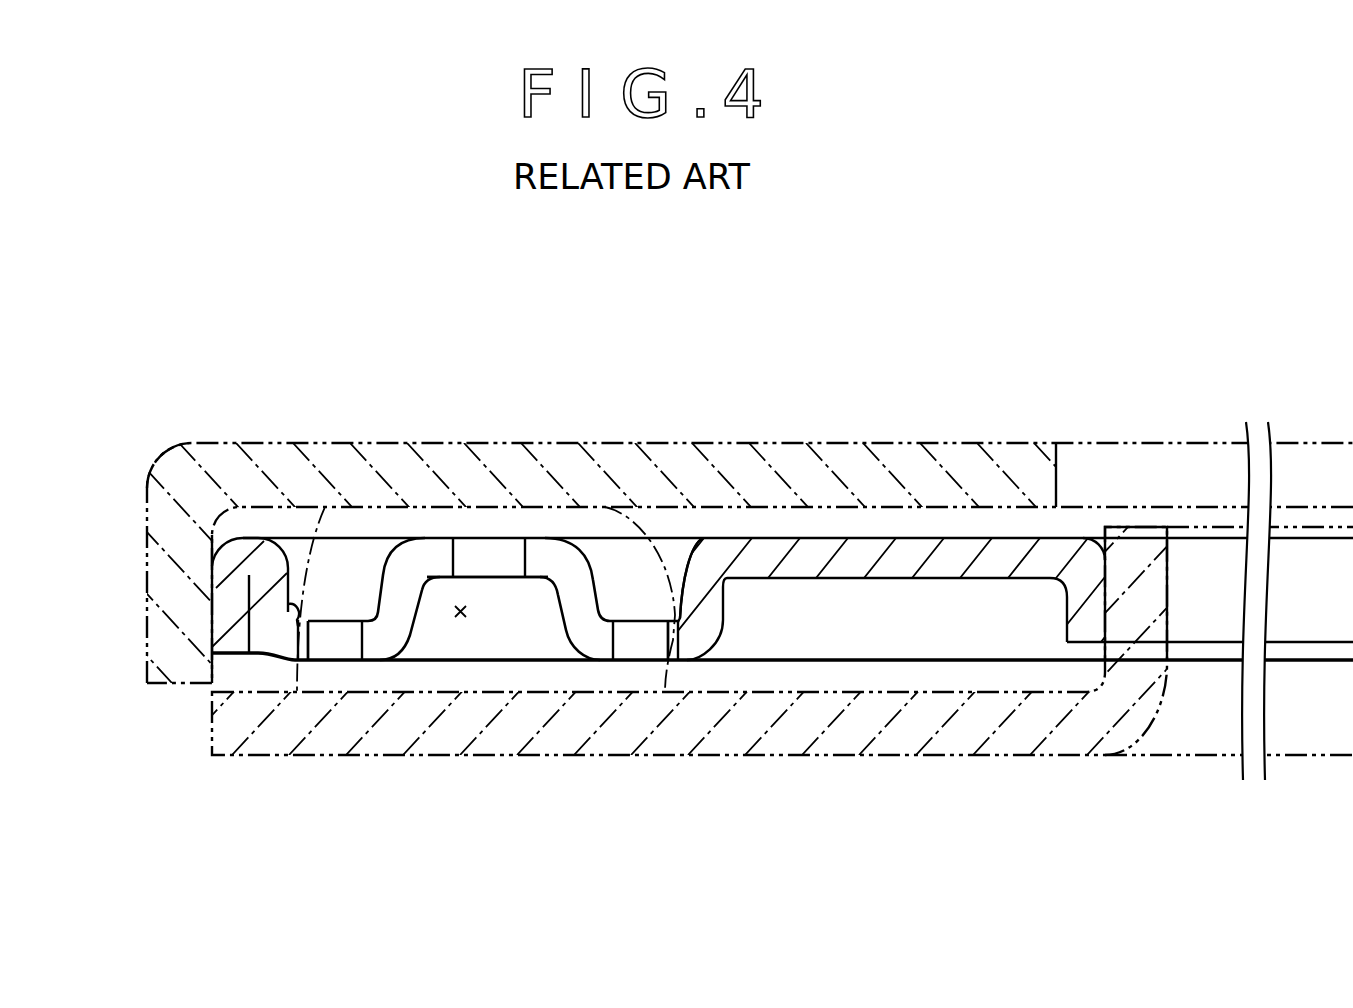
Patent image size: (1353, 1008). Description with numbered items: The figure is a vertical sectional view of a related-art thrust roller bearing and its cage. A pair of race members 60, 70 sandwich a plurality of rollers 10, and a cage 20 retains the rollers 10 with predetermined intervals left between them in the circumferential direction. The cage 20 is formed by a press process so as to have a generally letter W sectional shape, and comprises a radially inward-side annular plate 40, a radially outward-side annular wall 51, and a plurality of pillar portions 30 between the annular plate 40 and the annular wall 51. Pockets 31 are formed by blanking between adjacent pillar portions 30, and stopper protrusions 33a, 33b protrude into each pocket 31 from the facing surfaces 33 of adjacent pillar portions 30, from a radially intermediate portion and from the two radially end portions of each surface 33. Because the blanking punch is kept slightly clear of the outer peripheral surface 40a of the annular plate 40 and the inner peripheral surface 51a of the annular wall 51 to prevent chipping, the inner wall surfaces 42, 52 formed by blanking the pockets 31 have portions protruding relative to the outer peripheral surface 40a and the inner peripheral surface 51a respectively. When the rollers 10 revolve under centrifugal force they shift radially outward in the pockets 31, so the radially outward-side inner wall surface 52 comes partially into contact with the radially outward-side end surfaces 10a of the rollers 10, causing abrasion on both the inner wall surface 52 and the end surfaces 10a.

The roller 10 is at (328, 525).
The radially outward-side end surface of roller 10a is at (266, 443).
The cage 20 is at (805, 537).
The pillar portion 30 is at (637, 620).
The pocket 31 is at (461, 617).
The surface of pillar portion 33 is at (422, 553).
The stopper protrusion 33a is at (490, 560).
The stopper protrusion 33b is at (335, 650).
The radially inward-side annular plate 40 is at (943, 568).
The outer peripheral surface of radially inward-side annular plate 40a is at (678, 614).
The inner wall surface 42 is at (668, 640).
The radially outward-side annular wall 51 is at (268, 601).
The inner peripheral surface of radially outward-side annular wall 51a is at (290, 612).
The inner wall surface 52 is at (300, 662).
The race member 60 is at (931, 742).
The race member 70 is at (878, 470).